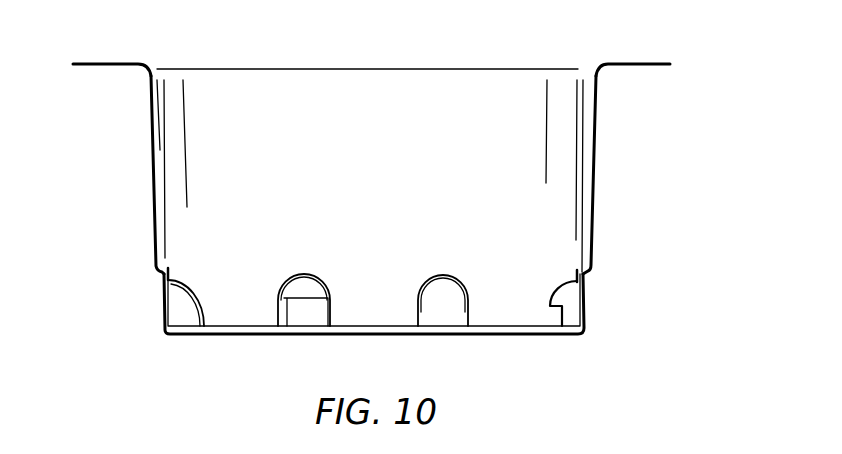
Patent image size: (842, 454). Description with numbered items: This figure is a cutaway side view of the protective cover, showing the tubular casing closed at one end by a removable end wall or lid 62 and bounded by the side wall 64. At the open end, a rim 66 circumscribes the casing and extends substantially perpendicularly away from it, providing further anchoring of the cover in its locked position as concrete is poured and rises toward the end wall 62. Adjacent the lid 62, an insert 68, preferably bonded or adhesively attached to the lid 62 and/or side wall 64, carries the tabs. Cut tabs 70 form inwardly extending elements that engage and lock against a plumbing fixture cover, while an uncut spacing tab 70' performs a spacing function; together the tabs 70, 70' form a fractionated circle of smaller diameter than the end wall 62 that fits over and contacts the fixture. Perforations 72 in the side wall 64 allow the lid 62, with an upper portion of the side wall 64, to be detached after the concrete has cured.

The end wall 62 is at (558, 336).
The side wall 64 is at (596, 158).
The rim 66 is at (643, 67).
The insert 68 is at (160, 290).
The locking tab 70 is at (462, 303).
The spacing tab 70' is at (140, 333).
The perforations 72 is at (588, 283).